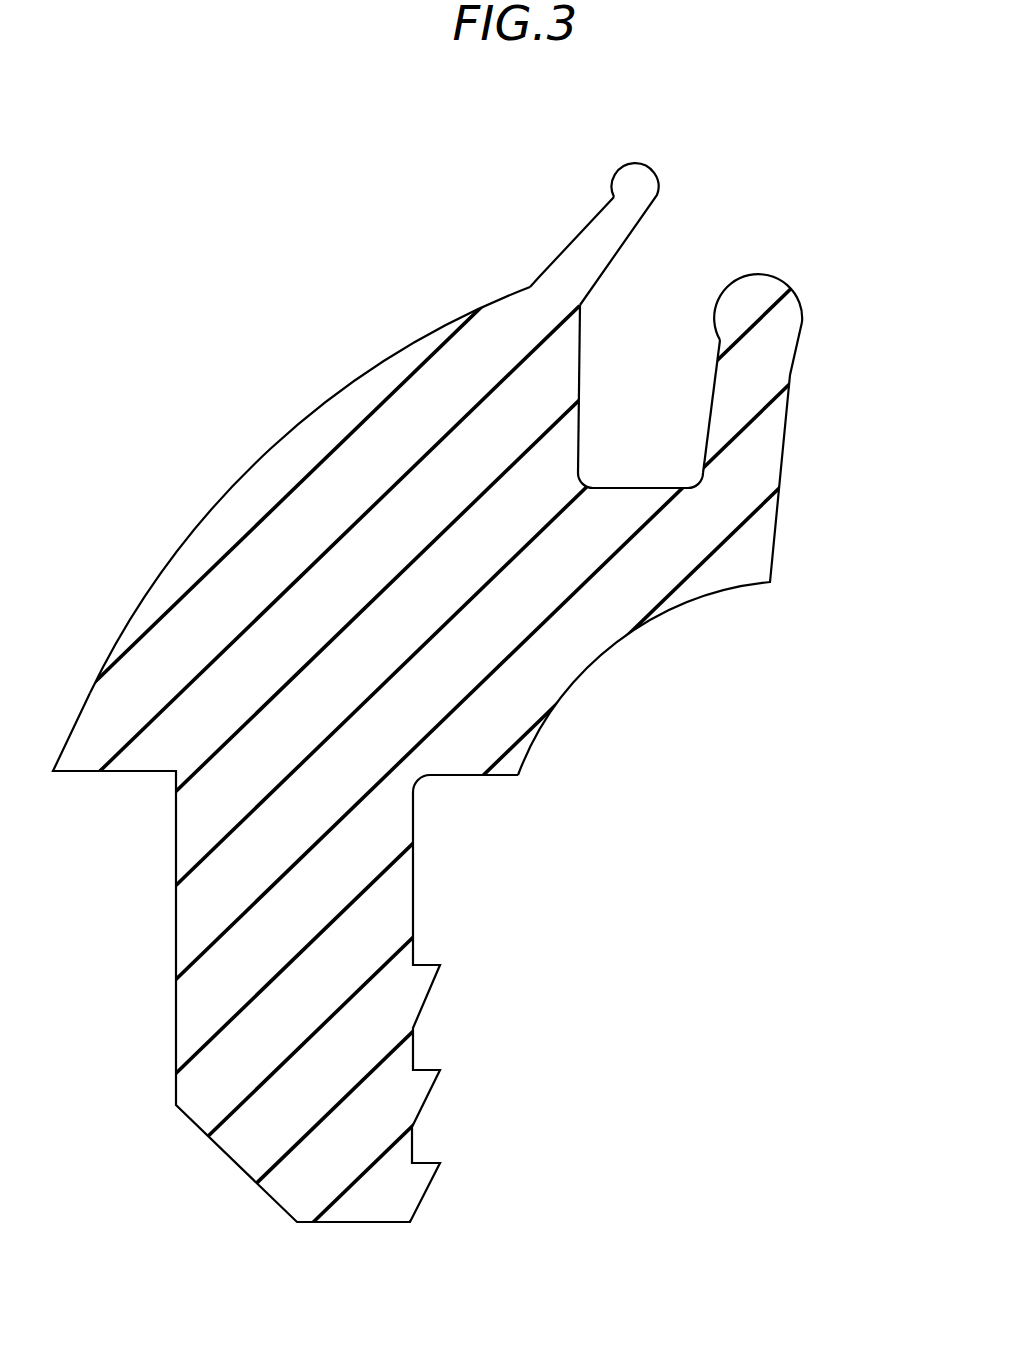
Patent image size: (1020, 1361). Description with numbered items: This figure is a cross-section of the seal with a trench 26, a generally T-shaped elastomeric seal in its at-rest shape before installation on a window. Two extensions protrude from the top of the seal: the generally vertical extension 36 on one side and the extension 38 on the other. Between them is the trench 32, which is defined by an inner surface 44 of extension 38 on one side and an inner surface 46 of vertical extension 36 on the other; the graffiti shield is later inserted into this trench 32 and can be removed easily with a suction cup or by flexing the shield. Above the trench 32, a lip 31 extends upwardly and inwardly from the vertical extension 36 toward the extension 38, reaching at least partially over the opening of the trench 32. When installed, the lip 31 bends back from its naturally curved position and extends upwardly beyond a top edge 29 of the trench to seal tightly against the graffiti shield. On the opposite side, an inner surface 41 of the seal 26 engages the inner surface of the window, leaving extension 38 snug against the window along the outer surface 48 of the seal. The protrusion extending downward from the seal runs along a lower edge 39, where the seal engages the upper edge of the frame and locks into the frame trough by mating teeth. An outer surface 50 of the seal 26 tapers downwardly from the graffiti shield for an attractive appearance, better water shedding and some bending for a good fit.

The seal with a trench 26 is at (122, 445).
The top edge 29 is at (530, 286).
The lip 31 is at (597, 194).
The trench 32 is at (525, 303).
The vertical extension 36 is at (577, 428).
The extension 38 is at (755, 350).
The lower edge 39 is at (468, 776).
The inner surface 41 is at (770, 535).
The inner surface 44 is at (712, 380).
The inner surface 46 is at (578, 410).
The outer surface 48 is at (790, 374).
The outer surface 50 is at (400, 360).